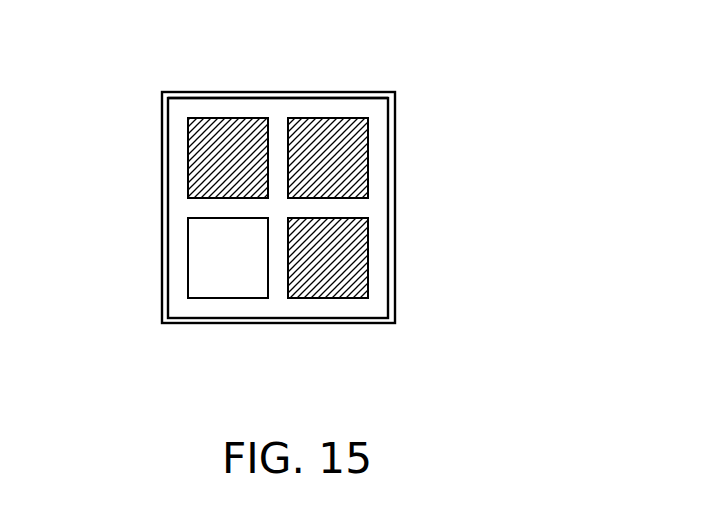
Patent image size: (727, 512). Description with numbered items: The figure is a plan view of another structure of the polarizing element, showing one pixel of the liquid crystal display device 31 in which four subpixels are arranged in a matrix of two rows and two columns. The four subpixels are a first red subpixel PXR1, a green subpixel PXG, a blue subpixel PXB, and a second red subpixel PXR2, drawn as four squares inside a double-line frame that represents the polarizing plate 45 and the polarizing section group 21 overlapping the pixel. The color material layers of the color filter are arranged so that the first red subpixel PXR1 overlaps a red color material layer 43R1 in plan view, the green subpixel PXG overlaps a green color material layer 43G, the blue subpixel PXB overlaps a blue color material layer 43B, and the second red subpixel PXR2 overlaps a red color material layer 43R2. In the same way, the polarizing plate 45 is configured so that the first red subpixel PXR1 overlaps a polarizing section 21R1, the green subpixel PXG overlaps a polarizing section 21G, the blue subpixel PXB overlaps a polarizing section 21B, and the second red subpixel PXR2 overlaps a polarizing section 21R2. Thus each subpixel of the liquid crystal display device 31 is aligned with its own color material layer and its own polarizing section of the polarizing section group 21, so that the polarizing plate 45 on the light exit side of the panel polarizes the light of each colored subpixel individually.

The polarizing plate 45 is at (375, 84).
The polarizing section group 21 is at (399, 113).
The liquid crystal display device 31 is at (405, 312).
The polarizing section 21R1 is at (229, 128).
The polarizing section 21G is at (320, 128).
The polarizing section 21B is at (233, 287).
The polarizing section 21R2 is at (327, 287).
The first red subpixel PXR1 is at (180, 130).
The green subpixel PXG is at (376, 173).
The blue subpixel PXB is at (180, 277).
The second red subpixel PXR2 is at (376, 275).
The red color material layer 43R1 is at (180, 172).
The green color material layer 43G is at (376, 128).
The blue color material layer 43B is at (180, 233).
The red color material layer 43R2 is at (376, 232).